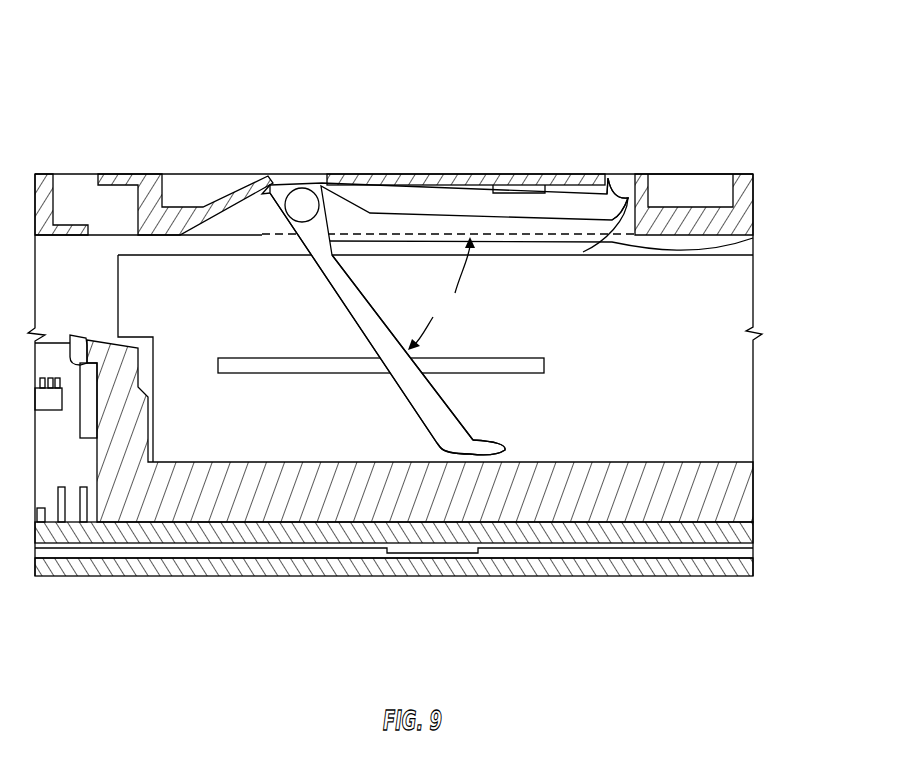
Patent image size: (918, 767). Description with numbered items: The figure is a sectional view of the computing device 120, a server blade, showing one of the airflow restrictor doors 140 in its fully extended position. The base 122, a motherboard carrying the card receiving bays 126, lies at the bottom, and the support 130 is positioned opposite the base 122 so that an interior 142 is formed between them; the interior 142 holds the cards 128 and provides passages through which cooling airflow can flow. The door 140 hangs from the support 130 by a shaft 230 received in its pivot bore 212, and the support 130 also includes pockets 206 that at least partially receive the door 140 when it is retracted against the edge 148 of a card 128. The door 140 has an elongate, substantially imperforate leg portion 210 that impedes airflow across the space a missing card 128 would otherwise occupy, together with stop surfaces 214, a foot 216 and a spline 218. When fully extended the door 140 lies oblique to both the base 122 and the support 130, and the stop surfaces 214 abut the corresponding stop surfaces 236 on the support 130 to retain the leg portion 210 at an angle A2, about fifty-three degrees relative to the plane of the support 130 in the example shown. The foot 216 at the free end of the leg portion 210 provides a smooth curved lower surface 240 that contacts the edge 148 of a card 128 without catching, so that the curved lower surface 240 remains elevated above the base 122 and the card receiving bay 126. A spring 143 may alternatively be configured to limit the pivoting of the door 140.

The computing device 120 is at (156, 93).
The support 130 is at (150, 173).
The stop surfaces 236 is at (270, 175).
The shaft 230 is at (301, 197).
The pivot bore 212 is at (337, 175).
The spring 143 is at (490, 185).
The foot 216 is at (612, 186).
The pockets 206 is at (697, 174).
The curved lower surface 240 is at (753, 237).
The interior 142 is at (735, 310).
The edge 148 is at (628, 256).
The cards 128 is at (636, 381).
The base 122 is at (737, 517).
The card receiving bays 126 is at (652, 500).
The spline 218 is at (583, 248).
The leg portion 210 is at (407, 388).
The stop surfaces 214 is at (268, 194).
The airflow restrictor doors 140 is at (338, 319).
The angle A2 is at (441, 293).